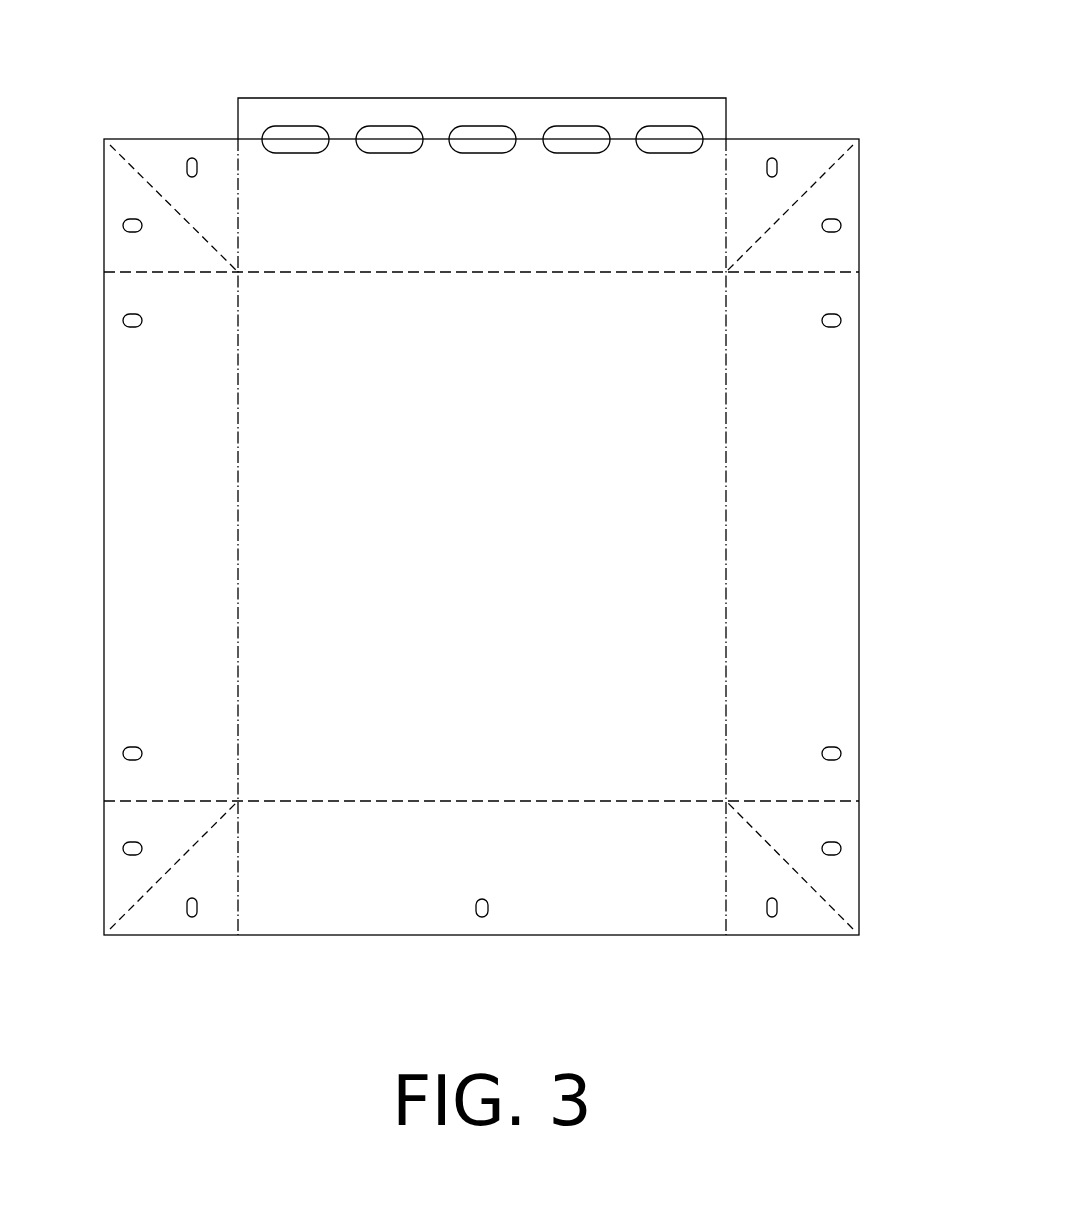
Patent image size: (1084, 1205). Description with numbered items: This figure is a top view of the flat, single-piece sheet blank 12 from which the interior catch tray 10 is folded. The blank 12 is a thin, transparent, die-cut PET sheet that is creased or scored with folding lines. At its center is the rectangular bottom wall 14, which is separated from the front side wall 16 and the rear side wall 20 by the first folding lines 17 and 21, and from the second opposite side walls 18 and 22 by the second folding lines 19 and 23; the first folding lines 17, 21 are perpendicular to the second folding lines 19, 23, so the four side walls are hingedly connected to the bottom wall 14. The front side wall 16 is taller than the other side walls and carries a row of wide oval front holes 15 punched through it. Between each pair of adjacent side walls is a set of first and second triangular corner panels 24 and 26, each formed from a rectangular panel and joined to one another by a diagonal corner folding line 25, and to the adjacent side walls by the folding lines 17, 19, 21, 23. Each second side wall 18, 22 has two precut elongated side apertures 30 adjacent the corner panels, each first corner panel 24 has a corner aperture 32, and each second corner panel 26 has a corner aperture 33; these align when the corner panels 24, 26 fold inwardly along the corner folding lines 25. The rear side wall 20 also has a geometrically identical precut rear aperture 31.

The interior catch tray 10 is at (900, 409).
The sheet blank 12 is at (822, 494).
The bottom wall 14 is at (488, 543).
The front holes 15 is at (477, 138).
The front side wall 16 is at (390, 200).
The first folding line 17 is at (475, 270).
The second side wall 18 is at (805, 575).
The second folding line 19 is at (780, 655).
The rear side wall 20 is at (611, 902).
The first folding line 21 is at (475, 799).
The second side wall 22 is at (157, 575).
The second folding line 23 is at (238, 668).
The first triangular corner panel 24 is at (156, 157).
The corner folding line 25 is at (133, 167).
The second triangular corner panel 26 is at (138, 263).
The side aperture 30 is at (131, 321).
The rear aperture 31 is at (483, 917).
The corner aperture 32 is at (192, 157).
The corner aperture 33 is at (131, 226).